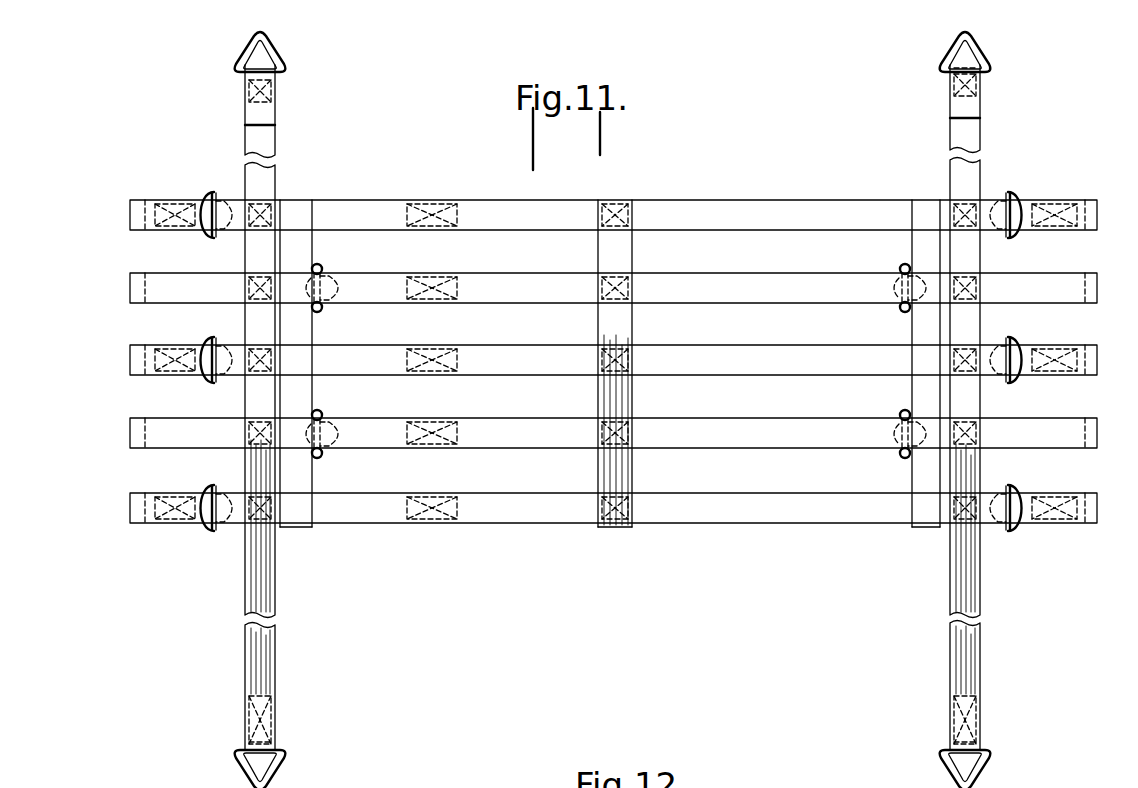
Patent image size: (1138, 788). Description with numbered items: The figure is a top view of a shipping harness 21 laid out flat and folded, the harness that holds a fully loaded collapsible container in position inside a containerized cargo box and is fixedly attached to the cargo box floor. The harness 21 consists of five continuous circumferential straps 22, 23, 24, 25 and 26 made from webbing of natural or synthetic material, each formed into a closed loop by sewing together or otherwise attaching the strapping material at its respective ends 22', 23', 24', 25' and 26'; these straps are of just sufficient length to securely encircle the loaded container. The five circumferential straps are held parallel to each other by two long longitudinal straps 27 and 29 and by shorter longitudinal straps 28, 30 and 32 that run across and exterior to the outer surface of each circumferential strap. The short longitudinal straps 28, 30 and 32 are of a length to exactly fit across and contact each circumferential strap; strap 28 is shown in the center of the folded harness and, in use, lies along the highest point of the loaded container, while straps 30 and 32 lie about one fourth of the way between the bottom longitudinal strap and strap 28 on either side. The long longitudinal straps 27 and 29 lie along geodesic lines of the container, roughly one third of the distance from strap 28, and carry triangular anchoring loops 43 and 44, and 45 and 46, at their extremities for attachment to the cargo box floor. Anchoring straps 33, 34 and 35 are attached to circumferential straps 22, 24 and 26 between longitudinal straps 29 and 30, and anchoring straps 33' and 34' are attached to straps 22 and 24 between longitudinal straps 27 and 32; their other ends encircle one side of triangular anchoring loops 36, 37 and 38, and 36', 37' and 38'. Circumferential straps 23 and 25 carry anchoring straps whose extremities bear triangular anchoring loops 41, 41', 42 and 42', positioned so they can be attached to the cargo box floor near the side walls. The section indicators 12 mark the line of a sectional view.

The shipping harness 21 is at (876, 170).
The circumferential strap 22 is at (613, 200).
The circumferential strap 23 is at (613, 274).
The circumferential strap 24 is at (613, 345).
The circumferential strap 25 is at (613, 416).
The circumferential strap 26 is at (613, 491).
The strap ends 22' is at (442, 193).
The strap ends 23' is at (442, 268).
The strap ends 24' is at (442, 342).
The strap ends 25' is at (441, 414).
The strap ends 26' is at (442, 488).
The long longitudinal strap 27 is at (270, 182).
The short longitudinal strap 28 is at (611, 198).
The long longitudinal strap 29 is at (982, 132).
The short longitudinal strap 30 is at (926, 527).
The short longitudinal strap 32 is at (297, 527).
The anchoring strap 33 is at (1065, 232).
The anchoring strap 33' is at (125, 369).
The anchoring strap 34 is at (1071, 377).
The anchoring strap 34' is at (125, 369).
The anchoring strap 35 is at (1062, 527).
The triangular anchoring loop 36 is at (1023, 200).
The triangular anchoring loop 36' is at (217, 191).
The triangular anchoring loop 37 is at (1029, 344).
The triangular anchoring loop 37' is at (217, 343).
The triangular anchoring loop 38 is at (1024, 491).
The triangular anchoring loop 38' is at (217, 491).
The triangular anchoring loop 41 is at (890, 299).
The triangular anchoring loop 41' is at (344, 272).
The triangular anchoring loop 42 is at (890, 421).
The triangular anchoring loop 42' is at (337, 419).
The triangular anchoring loop 43 is at (288, 60).
The triangular anchoring loop 44 is at (283, 768).
The triangular anchoring loop 45 is at (993, 60).
The triangular anchoring loop 46 is at (944, 772).
The section line indicator 12 is at (181, 613).